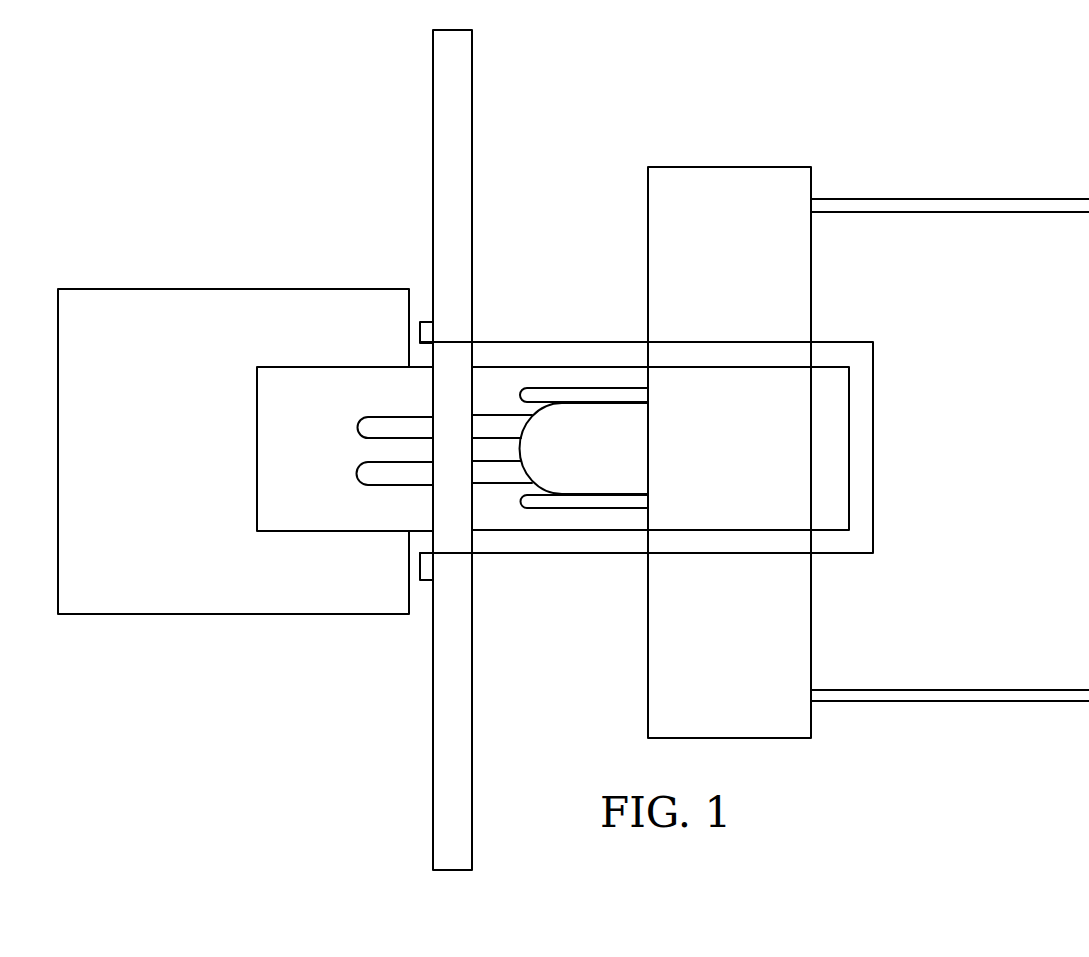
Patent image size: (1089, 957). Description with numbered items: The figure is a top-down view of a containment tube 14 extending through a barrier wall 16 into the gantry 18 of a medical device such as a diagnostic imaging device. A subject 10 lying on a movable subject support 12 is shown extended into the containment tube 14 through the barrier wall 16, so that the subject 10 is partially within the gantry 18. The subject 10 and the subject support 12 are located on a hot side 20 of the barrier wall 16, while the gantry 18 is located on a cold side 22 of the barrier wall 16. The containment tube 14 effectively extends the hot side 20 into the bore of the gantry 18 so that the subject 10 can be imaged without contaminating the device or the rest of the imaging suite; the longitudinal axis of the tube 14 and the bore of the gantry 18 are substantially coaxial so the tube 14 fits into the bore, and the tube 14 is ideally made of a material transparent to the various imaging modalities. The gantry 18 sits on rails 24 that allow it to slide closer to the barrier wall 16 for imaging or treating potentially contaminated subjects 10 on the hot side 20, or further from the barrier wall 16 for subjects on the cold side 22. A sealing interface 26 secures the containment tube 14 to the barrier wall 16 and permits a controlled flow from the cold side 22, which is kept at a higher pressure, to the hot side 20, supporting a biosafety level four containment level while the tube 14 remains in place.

The subject 10 is at (632, 388).
The movable subject support 12 is at (257, 405).
The containment tube 14 is at (874, 387).
The barrier wall 16 is at (472, 134).
The gantry 18 is at (672, 167).
The hot side 20 is at (194, 136).
The cold side 22 is at (923, 81).
The rails 24 is at (974, 199).
The sealing interface 26 is at (428, 320).